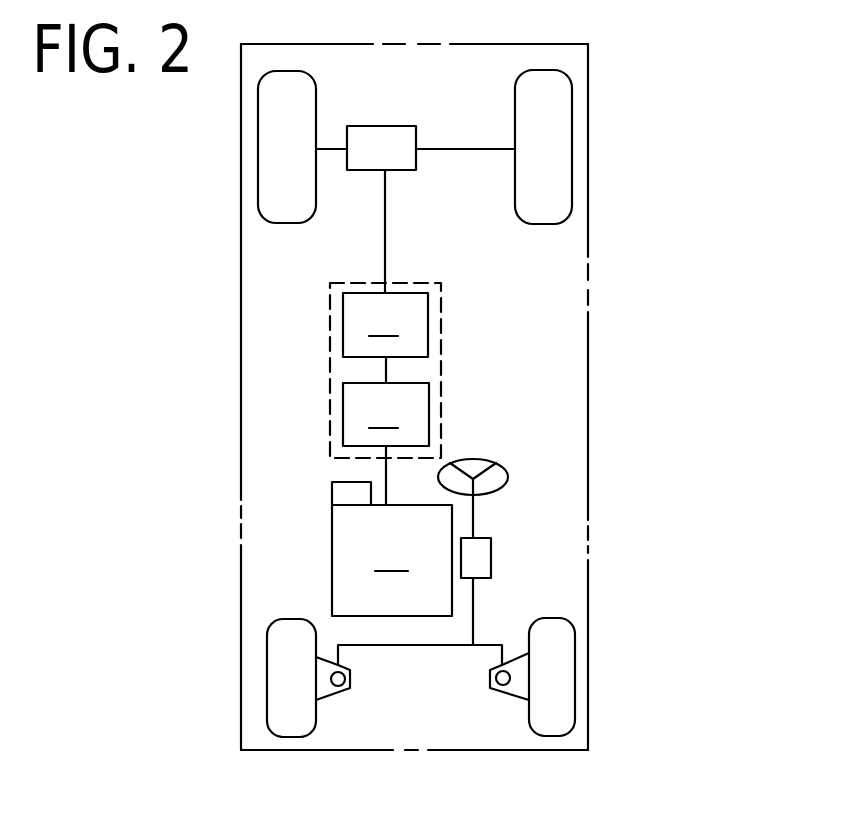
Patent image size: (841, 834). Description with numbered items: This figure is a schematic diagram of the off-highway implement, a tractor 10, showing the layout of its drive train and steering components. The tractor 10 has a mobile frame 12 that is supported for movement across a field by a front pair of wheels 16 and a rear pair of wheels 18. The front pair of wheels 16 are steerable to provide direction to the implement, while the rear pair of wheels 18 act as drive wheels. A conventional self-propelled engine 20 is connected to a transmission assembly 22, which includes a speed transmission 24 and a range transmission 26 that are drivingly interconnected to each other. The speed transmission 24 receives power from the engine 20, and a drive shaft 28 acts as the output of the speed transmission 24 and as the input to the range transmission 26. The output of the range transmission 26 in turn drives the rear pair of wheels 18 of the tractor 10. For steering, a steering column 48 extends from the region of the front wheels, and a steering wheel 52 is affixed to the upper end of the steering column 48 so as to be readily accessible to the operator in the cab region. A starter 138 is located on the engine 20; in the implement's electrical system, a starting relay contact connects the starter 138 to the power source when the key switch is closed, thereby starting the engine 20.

The tractor 10 is at (680, 223).
The mobile frame 12 is at (588, 391).
The front pair of wheels 16 is at (283, 681).
The rear pair of wheels 18 is at (272, 166).
The engine 20 is at (392, 560).
The transmission assembly 22 is at (316, 323).
The speed transmission 24 is at (386, 414).
The range transmission 26 is at (385, 325).
The drive shaft 28 is at (386, 373).
The steering column 48 is at (477, 518).
The steering wheel 52 is at (509, 472).
The starter 138 is at (343, 491).